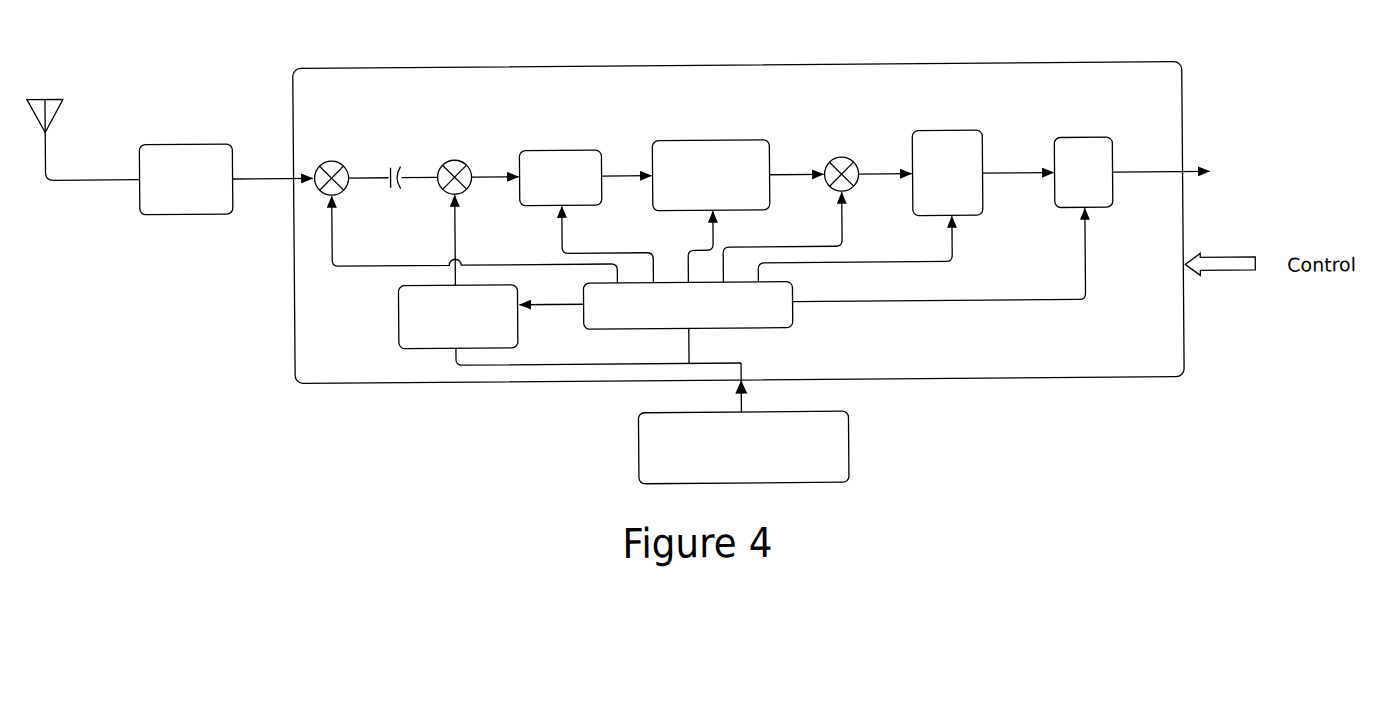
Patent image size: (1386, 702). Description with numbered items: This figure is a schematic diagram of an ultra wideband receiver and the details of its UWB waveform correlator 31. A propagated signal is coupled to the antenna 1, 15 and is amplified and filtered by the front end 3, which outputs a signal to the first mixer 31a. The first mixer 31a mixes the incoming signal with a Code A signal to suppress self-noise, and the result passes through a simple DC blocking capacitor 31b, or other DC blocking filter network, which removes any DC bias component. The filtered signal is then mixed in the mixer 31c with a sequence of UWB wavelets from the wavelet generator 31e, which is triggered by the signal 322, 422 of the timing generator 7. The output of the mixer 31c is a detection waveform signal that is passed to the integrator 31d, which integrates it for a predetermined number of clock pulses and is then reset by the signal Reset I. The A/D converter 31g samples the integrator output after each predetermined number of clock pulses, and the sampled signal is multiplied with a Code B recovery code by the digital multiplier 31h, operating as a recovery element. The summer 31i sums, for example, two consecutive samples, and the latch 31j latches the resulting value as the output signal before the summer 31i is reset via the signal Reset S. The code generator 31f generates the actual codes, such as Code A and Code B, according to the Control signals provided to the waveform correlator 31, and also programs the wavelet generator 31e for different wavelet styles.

The antenna 1 is at (93, 137).
The antenna 15 is at (57, 113).
The front end 3 is at (177, 210).
The timing generator 7 is at (847, 433).
The UWB waveform correlator 31 is at (1028, 380).
The first mixer 31a is at (333, 157).
The DC blocking capacitor 31b is at (397, 158).
The mixer 31c is at (461, 157).
The integrator 31d is at (537, 149).
The wavelet generator 31e is at (415, 346).
The code generator 31f is at (771, 328).
The A/D converter 31g is at (715, 140).
The digital multiplier 31h is at (846, 157).
The summer 31i is at (950, 132).
The latch 31j is at (1085, 140).
The timing signal 322 is at (793, 387).
The timing signal 422 is at (744, 399).